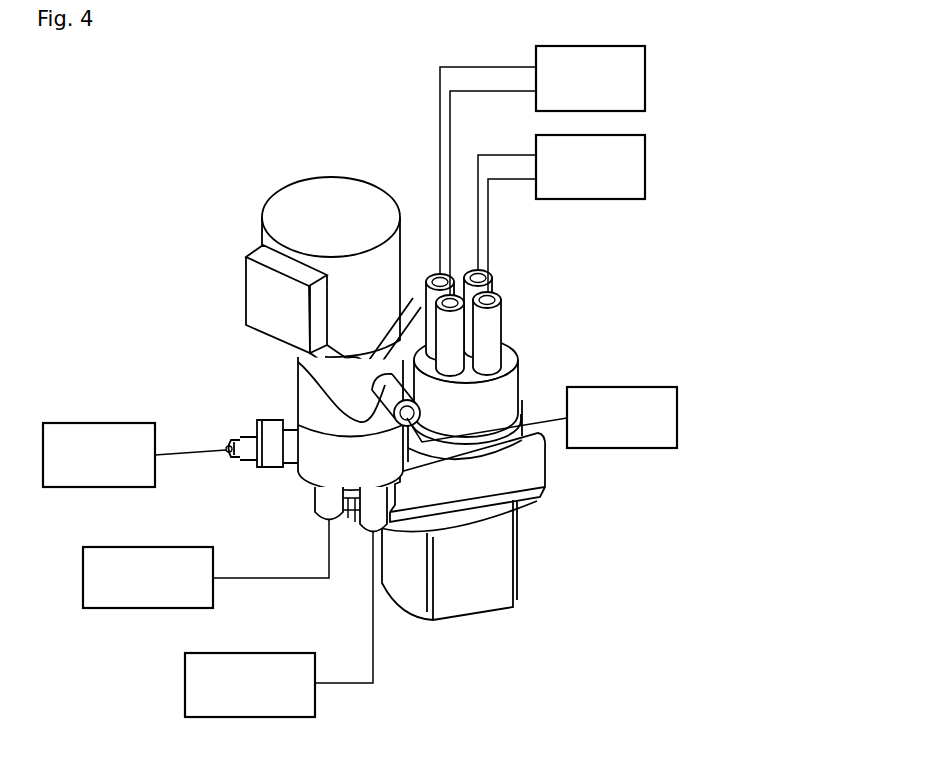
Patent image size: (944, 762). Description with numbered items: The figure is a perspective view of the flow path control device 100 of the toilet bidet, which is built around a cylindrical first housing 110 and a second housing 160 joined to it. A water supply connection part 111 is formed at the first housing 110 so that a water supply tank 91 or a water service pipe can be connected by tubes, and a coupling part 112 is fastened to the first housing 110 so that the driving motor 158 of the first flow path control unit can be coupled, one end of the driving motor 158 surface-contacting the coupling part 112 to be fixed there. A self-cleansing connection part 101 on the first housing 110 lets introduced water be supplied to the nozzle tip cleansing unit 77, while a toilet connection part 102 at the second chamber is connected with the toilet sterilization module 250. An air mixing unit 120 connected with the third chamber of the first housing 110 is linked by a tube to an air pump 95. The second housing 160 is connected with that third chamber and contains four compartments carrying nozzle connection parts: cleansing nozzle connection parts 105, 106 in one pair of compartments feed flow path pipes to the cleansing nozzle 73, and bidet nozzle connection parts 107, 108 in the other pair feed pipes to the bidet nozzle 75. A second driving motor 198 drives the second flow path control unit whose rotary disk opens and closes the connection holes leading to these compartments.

The flow path control device 100 is at (167, 98).
The driving motor 158 is at (311, 178).
The coupling part 112 is at (323, 357).
The water supply connection part 111 is at (307, 368).
The first housing 110 is at (303, 388).
The air mixing unit 120 is at (290, 430).
The self-cleansing connection part 101 is at (315, 505).
The toilet connection part 102 is at (368, 527).
The cleansing nozzle connection part 105 is at (493, 329).
The cleansing nozzle connection part 106 is at (479, 281).
The bidet nozzle connection part 107 is at (443, 280).
The bidet nozzle connection part 108 is at (455, 322).
The second housing 160 is at (507, 377).
The driving motor 198 is at (517, 577).
The bidet nozzle 75 is at (646, 78).
The cleansing nozzle 73 is at (646, 168).
The water supply tank 91 is at (630, 449).
The air pump 95 is at (95, 420).
The nozzle tip cleansing unit 77 is at (145, 609).
The toilet sterilization module 250 is at (316, 700).